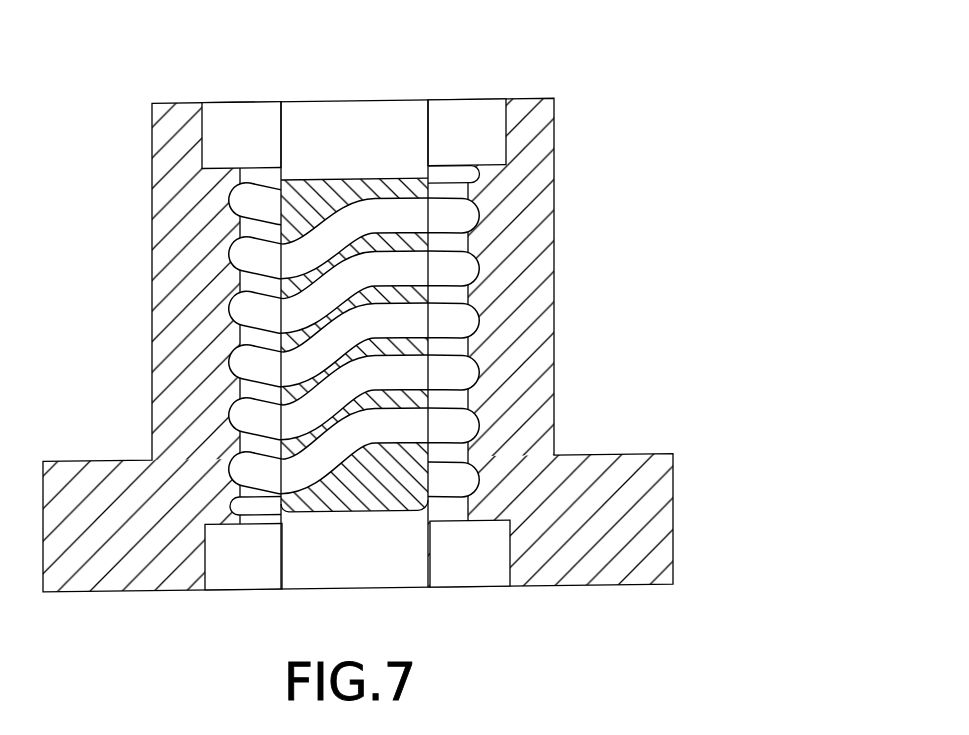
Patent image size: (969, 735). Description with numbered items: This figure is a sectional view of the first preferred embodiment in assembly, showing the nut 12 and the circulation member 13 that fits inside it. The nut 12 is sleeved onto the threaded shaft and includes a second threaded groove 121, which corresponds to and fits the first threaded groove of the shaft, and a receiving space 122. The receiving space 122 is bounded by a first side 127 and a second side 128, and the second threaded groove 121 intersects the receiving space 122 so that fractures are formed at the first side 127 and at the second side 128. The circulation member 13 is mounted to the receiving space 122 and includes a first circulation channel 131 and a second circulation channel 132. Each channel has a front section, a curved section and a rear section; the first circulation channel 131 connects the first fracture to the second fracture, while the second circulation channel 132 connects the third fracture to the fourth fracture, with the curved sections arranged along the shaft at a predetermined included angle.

The nut 12 is at (554, 180).
The second threaded groove 121 is at (231, 194).
The receiving space 122 is at (410, 160).
The first side 127 is at (280, 139).
The second side 128 is at (428, 121).
The circulation member 13 is at (431, 262).
The first circulation channel 131 is at (386, 216).
The second circulation channel 132 is at (395, 272).